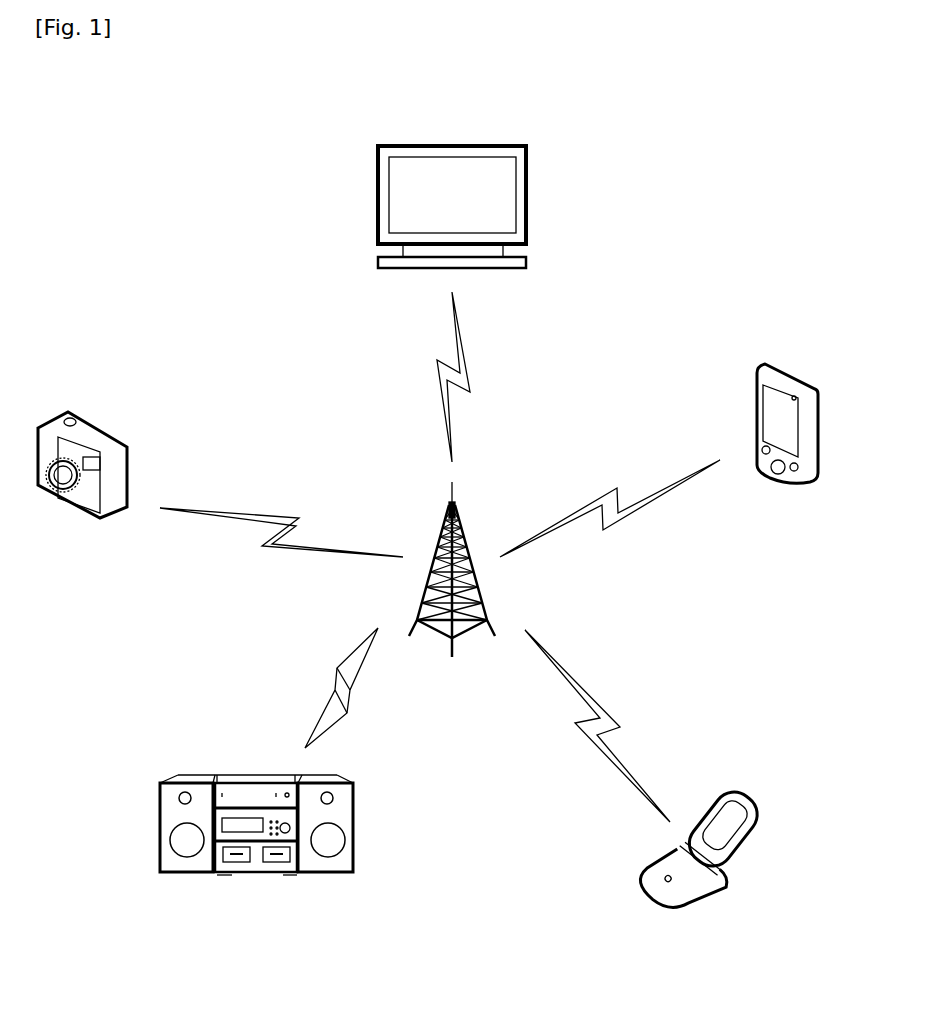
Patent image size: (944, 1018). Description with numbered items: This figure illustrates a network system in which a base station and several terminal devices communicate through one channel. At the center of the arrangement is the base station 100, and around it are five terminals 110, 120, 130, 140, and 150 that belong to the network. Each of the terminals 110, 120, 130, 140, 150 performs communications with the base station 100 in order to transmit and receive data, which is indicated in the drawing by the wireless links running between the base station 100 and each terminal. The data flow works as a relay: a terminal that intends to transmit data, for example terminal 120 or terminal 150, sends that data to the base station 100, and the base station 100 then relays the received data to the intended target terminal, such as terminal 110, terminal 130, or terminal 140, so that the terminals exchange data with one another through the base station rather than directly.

The base station 100 is at (458, 530).
The terminal 110 is at (450, 146).
The terminal 120 is at (43, 418).
The terminal 130 is at (250, 872).
The terminal 140 is at (675, 908).
The terminal 150 is at (791, 369).